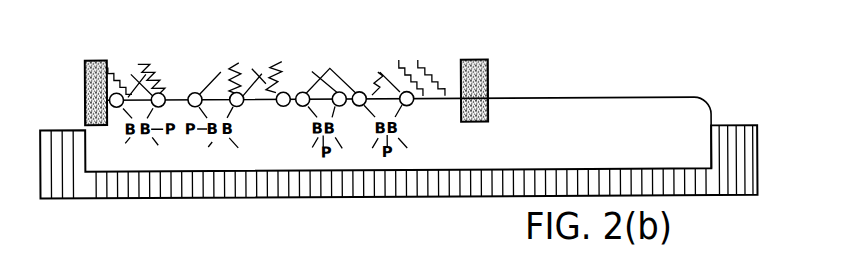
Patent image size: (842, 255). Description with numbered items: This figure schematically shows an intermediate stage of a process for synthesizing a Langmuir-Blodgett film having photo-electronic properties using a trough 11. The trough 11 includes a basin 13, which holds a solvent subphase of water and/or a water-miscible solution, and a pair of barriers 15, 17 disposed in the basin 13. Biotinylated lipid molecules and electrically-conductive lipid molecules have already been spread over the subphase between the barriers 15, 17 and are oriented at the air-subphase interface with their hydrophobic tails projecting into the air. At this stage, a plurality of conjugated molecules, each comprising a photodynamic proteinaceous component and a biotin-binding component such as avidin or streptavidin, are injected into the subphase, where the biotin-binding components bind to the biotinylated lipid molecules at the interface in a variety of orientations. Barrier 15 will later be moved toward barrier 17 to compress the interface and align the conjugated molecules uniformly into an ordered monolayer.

The trough 11 is at (766, 147).
The basin 13 is at (695, 98).
The barrier 15 is at (488, 68).
The barrier 17 is at (84, 83).